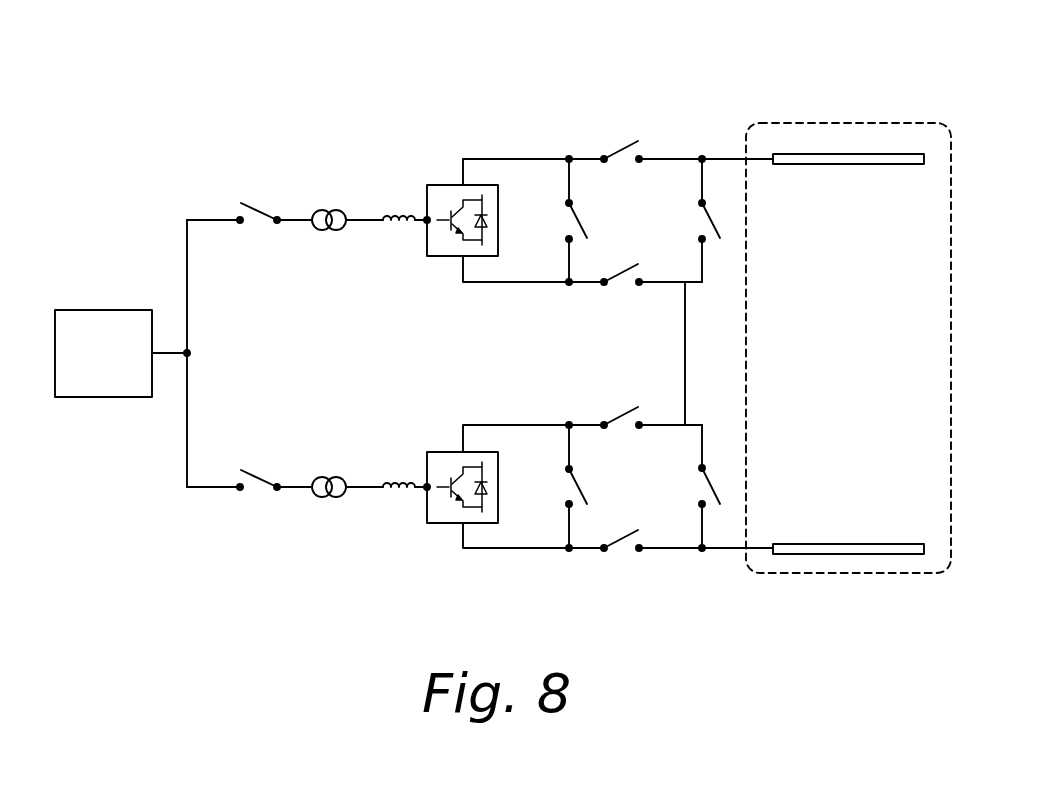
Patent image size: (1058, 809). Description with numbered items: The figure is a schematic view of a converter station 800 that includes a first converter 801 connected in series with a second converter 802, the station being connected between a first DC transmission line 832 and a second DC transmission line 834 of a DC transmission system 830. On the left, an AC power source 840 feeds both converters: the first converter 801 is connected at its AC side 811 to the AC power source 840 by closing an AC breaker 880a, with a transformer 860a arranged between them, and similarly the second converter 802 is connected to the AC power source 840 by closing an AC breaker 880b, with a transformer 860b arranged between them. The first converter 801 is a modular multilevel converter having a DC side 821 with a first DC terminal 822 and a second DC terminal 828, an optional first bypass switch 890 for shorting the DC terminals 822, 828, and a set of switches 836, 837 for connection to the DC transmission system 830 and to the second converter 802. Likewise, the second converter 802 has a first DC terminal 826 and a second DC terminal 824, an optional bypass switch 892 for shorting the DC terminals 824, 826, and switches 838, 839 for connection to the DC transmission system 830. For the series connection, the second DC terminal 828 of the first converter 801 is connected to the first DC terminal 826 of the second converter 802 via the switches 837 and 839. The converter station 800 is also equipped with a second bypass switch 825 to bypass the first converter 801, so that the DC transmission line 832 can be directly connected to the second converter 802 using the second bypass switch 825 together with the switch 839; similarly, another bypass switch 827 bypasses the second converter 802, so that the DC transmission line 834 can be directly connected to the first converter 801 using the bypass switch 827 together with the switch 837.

The converter station 800 is at (108, 130).
The AC power source 840 is at (103, 309).
The transformer 860a is at (328, 210).
The transformer 860b is at (328, 477).
The AC breaker 880a is at (258, 213).
The AC breaker 880b is at (258, 480).
The AC side 811 is at (396, 240).
The first converter 801 is at (447, 185).
The second converter 802 is at (447, 452).
The DC side 821 is at (516, 220).
The first DC terminal 822 is at (569, 159).
The second DC terminal 828 is at (569, 283).
The first DC terminal 826 is at (569, 425).
The second DC terminal 824 is at (569, 549).
The first bypass switch 890 is at (606, 212).
The first bypass switch 892 is at (606, 479).
The switch 836 is at (623, 148).
The switch 837 is at (622, 276).
The switch 839 is at (623, 414).
The switch 838 is at (622, 542).
The second bypass switch 825 is at (707, 215).
The bypass switch 827 is at (707, 480).
The DC transmission line 832 is at (850, 165).
The DC transmission line 834 is at (850, 543).
The DC transmission system 830 is at (850, 574).